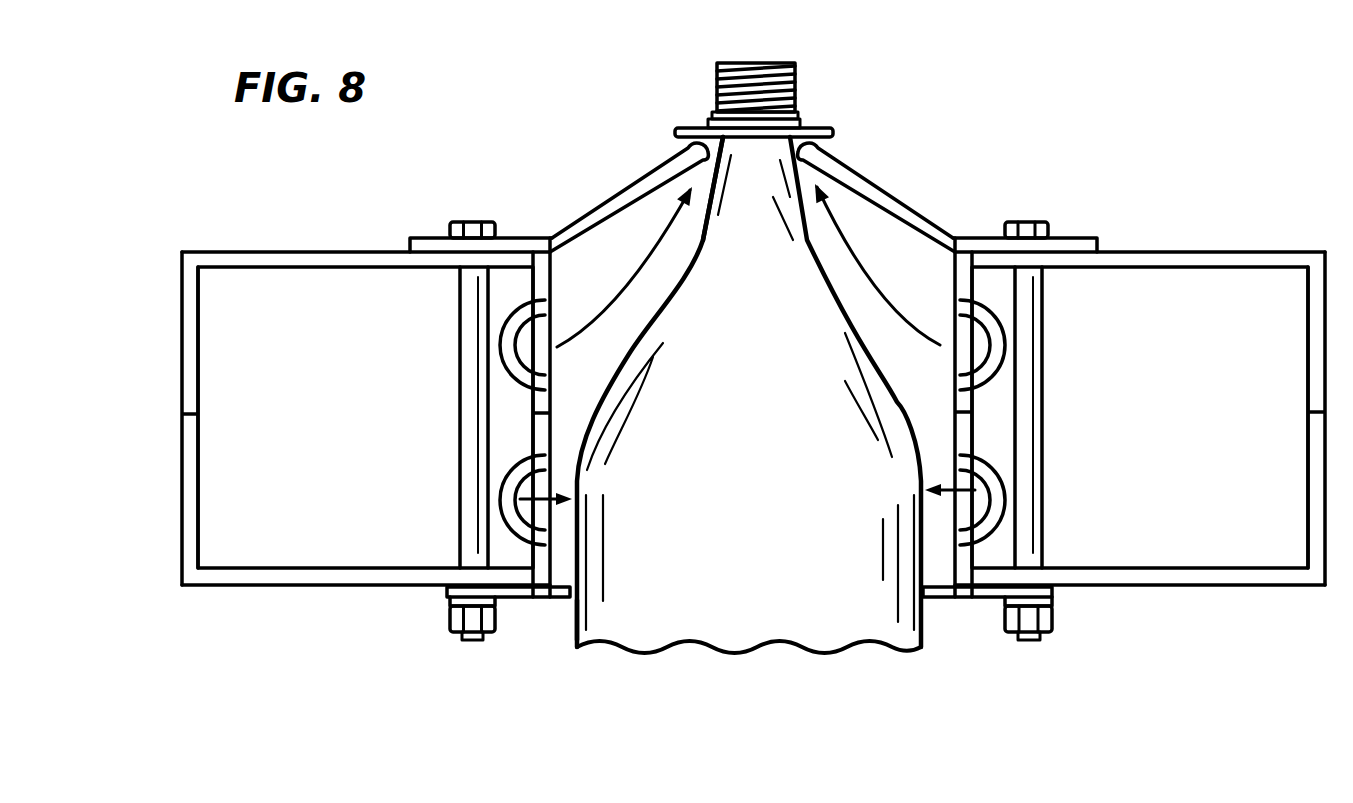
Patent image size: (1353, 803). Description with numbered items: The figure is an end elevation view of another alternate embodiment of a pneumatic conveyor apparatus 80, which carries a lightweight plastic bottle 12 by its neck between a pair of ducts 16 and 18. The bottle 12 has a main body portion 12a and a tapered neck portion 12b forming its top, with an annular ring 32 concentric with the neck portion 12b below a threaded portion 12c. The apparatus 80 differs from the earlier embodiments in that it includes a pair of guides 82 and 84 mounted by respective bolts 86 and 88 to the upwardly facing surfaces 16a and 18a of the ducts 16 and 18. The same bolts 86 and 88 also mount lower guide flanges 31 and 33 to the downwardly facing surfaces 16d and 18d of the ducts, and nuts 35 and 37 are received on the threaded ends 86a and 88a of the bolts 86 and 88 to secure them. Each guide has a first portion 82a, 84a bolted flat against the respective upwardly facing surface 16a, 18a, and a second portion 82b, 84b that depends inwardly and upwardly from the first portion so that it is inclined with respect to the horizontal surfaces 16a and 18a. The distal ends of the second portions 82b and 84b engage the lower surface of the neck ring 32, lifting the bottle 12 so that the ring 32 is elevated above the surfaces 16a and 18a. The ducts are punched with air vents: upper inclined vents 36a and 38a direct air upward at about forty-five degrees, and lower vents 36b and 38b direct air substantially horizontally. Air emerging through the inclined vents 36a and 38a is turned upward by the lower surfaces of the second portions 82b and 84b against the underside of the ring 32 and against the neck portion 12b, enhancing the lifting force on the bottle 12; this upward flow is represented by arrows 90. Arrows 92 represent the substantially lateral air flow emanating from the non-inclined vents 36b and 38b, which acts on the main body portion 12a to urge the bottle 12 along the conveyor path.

The bottle 12 is at (727, 569).
The main body portion 12a is at (577, 625).
The tapered neck portion 12b is at (700, 245).
The threaded portion 12c is at (718, 73).
The duct 16 is at (182, 252).
The upwardly facing surface 16a is at (318, 252).
The downwardly facing surface 16d is at (270, 587).
The duct 18 is at (1322, 252).
The upwardly facing surface 18a is at (1212, 252).
The downwardly facing surface 18d is at (1252, 587).
The lower guide flange 31 is at (518, 598).
The annular ring 32 is at (823, 127).
The lower guide flange 33 is at (960, 598).
The nut 35 is at (448, 615).
The upper air vents 36a is at (527, 343).
The lower air vents 36b is at (522, 490).
The nut 37 is at (1052, 618).
The upper air vents 38a is at (980, 343).
The lower air vents 38b is at (975, 488).
The pneumatic conveyor apparatus 80 is at (567, 69).
The guide 82 is at (552, 355).
The first portion 82a is at (425, 238).
The second portion 82b is at (610, 195).
The guide 84 is at (960, 355).
The first portion 84a is at (1078, 238).
The second portion 84b is at (905, 185).
The bolt 86 is at (472, 222).
The threaded end 86a is at (470, 640).
The bolt 88 is at (1030, 222).
The threaded end 88a is at (1030, 640).
The arrows 90 is at (625, 287).
The arrows 92 is at (545, 503).